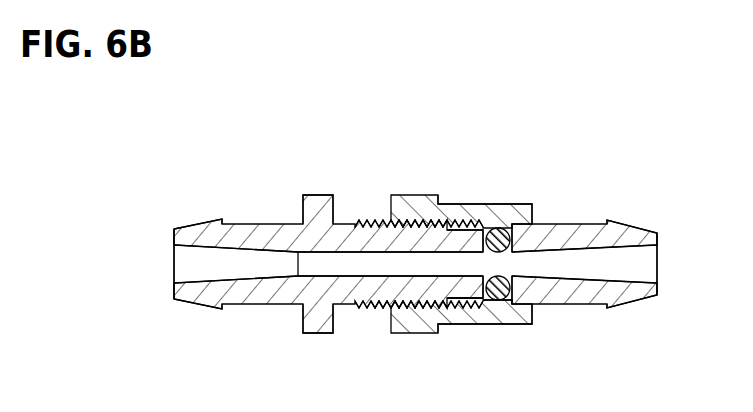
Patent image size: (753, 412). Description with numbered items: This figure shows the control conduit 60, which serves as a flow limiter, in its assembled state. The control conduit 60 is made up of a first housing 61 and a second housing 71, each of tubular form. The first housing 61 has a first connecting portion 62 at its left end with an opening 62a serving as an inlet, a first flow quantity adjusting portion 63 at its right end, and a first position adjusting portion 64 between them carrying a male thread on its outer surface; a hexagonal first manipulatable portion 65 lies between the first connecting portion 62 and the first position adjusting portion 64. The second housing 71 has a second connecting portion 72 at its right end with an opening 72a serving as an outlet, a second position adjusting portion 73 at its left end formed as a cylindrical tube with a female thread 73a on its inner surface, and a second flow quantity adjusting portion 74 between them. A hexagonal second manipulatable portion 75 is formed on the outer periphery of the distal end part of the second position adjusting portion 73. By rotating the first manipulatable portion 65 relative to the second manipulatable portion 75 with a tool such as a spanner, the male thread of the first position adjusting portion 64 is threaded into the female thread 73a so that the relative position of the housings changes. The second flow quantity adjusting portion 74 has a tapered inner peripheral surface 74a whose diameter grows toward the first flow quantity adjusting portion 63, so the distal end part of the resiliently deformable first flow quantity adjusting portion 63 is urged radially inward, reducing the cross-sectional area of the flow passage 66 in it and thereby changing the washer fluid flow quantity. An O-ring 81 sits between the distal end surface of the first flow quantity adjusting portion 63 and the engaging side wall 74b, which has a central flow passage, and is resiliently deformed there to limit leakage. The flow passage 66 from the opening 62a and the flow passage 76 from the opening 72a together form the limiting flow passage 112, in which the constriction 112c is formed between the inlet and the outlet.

The control conduit 60 is at (231, 136).
The first housing 61 is at (261, 195).
The first connecting portion 62 is at (183, 226).
The opening 62a is at (186, 246).
The first flow quantity adjusting portion 63 is at (470, 229).
The first position adjusting portion 64 is at (375, 222).
The first manipulatable portion 65 is at (318, 195).
The flow passage 66 is at (202, 279).
The second housing 71 is at (570, 171).
The second connecting portion 72 is at (647, 228).
The opening 72a is at (657, 244).
The second position adjusting portion 73 is at (444, 215).
The female thread 73a is at (398, 300).
The second flow quantity adjusting portion 74 is at (523, 203).
The inner peripheral surface 74a is at (497, 294).
The engaging side wall 74b is at (513, 263).
The second manipulatable portion 75 is at (403, 194).
The flow passage 76 is at (632, 288).
The O-ring 81 is at (505, 229).
The limiting flow passage 112 is at (342, 268).
The constriction 112c is at (462, 297).